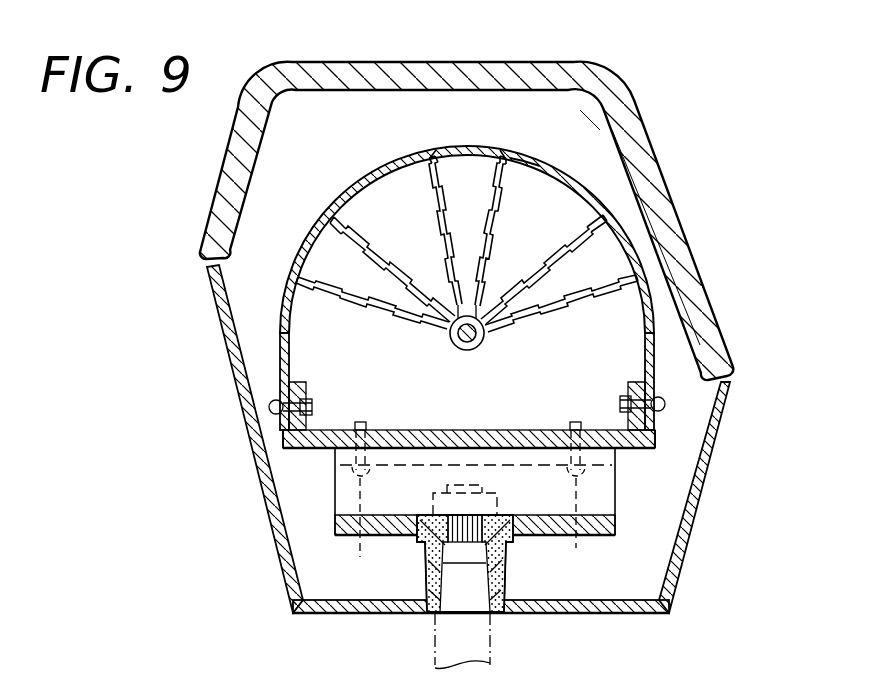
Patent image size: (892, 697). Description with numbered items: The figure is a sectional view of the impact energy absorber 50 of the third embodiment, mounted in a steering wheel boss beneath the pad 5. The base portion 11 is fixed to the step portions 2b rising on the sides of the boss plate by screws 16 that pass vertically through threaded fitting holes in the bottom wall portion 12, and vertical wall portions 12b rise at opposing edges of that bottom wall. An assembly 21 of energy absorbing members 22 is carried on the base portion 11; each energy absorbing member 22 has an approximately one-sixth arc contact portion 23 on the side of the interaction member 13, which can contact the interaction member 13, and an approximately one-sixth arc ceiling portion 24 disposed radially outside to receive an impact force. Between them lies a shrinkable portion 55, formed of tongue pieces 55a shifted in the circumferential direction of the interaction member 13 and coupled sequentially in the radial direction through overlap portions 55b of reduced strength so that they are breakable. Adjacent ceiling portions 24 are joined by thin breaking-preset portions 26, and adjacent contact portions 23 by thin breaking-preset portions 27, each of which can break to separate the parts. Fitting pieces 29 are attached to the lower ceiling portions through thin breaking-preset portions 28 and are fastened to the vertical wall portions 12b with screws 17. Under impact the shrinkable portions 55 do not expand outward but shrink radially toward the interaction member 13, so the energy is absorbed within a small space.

The pad 5 is at (278, 75).
The assembly 21 is at (606, 134).
The impact energy absorber 50 is at (597, 110).
The energy absorbing member 22 is at (468, 106).
The breaking-preset portion 26 is at (567, 178).
The ceiling portion 24 is at (525, 162).
The breaking-preset portion 28 is at (290, 341).
The fitting piece 29 is at (288, 386).
The screw 17 is at (268, 410).
The shrinkable portion 55 is at (375, 228).
The overlap portion 55b is at (445, 150).
The tongue piece 55a is at (503, 168).
The contact portion 23 is at (466, 300).
The breaking-preset portion 27 is at (452, 341).
The interaction member 13 is at (466, 352).
The bottom wall portion 12 is at (638, 452).
The vertical wall portion 12b is at (290, 440).
The step portion 2b is at (612, 465).
The screw 16 is at (461, 501).
The base portion 11 is at (668, 452).